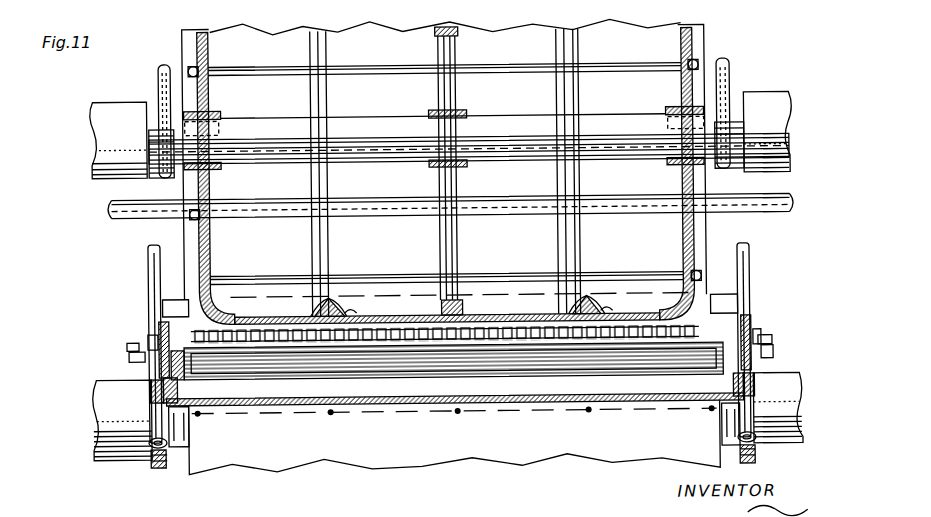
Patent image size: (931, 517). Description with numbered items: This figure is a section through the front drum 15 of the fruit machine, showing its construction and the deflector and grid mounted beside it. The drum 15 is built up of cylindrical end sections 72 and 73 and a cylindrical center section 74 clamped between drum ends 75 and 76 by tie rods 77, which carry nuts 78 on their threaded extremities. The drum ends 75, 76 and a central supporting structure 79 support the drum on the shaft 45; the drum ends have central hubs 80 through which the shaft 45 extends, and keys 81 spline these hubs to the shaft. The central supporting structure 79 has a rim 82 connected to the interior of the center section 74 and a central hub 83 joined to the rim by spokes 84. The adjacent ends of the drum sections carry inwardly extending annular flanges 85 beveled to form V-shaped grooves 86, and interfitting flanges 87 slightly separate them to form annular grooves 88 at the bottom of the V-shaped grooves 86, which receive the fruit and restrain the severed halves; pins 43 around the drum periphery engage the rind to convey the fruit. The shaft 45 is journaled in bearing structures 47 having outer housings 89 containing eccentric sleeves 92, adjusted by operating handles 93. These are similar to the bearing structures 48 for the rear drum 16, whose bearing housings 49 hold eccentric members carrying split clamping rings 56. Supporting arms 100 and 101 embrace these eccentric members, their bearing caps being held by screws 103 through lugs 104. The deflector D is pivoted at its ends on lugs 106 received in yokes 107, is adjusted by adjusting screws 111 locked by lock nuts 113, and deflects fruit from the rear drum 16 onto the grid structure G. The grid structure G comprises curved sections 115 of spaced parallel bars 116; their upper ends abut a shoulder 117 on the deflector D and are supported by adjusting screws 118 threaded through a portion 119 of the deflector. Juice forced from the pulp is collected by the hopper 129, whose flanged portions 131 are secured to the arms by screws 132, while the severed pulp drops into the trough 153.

The front drum 15 is at (380, 42).
The rear drum 16 is at (563, 448).
The pins 43 is at (278, 325).
The shaft 45 is at (610, 136).
The bearing structures 47 is at (92, 127).
The bearing structures 48 is at (108, 464).
The bearing housings 49 is at (124, 424).
The split clamping rings 56 is at (187, 432).
The cylindrical end section 72 is at (249, 322).
The cylindrical end section 73 is at (646, 320).
The cylindrical center section 74 is at (422, 320).
The drum end 75 is at (211, 240).
The drum end 76 is at (683, 240).
The tie rods 77 is at (379, 74).
The nuts 78 is at (201, 67).
The central supporting structure 79 is at (463, 186).
The central hubs 80 is at (214, 168).
The keys 81 is at (223, 117).
The rim 82 is at (461, 300).
The central hub 83 is at (436, 168).
The spokes 84 is at (458, 91).
The annular flanges 85 is at (332, 299).
The V-shaped grooves 86 is at (333, 342).
The interfitting flanges 87 is at (314, 300).
The annular grooves 88 is at (342, 310).
The outer housings 89 is at (768, 130).
The eccentric sleeves 92 is at (148, 181).
The operating handles 93 is at (162, 88).
The supporting arm 100 is at (161, 296).
The supporting arm 101 is at (750, 281).
The screws 103 is at (158, 470).
The lugs 104 is at (152, 456).
The lugs 106 is at (186, 350).
The yokes 107 is at (218, 352).
The adjusting screws 111 is at (130, 349).
The lock nuts 113 is at (150, 340).
The curved sections 115 is at (228, 323).
The bars 116 is at (300, 342).
The shoulder 117 is at (170, 325).
The adjusting screws 118 is at (362, 345).
The portion 119 is at (490, 345).
The juice collecting hopper 129 is at (434, 405).
The flanged portions 131 is at (160, 392).
The screws 132 is at (453, 387).
The trough 153 is at (260, 460).
The deflector D is at (177, 296).
The grid structure G is at (515, 352).